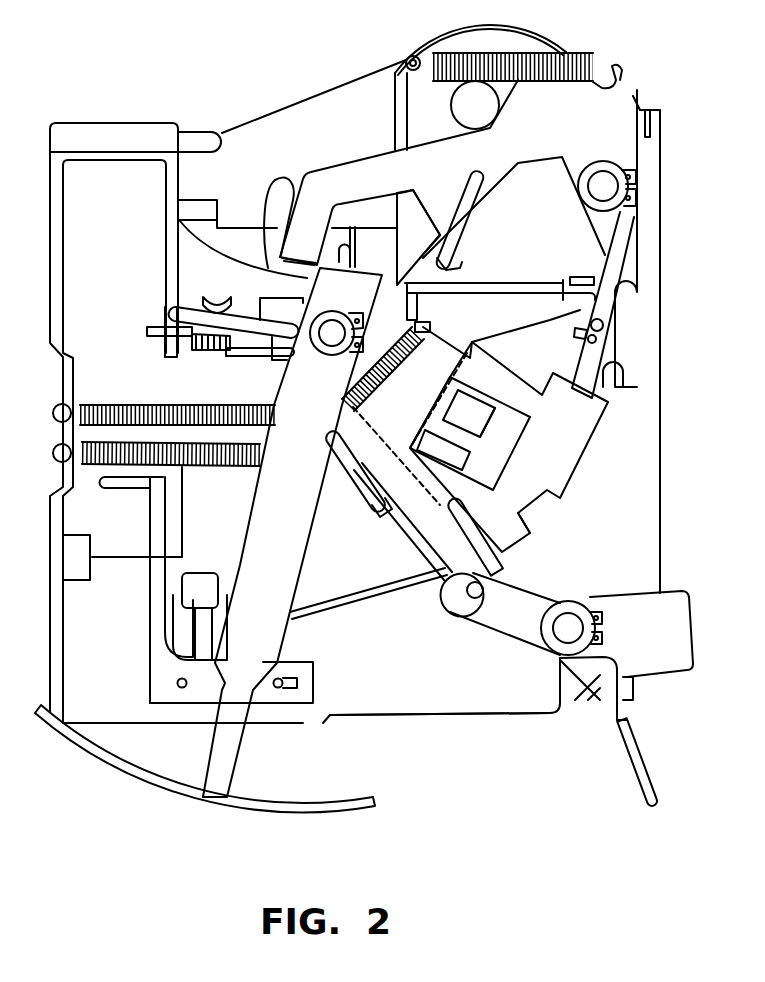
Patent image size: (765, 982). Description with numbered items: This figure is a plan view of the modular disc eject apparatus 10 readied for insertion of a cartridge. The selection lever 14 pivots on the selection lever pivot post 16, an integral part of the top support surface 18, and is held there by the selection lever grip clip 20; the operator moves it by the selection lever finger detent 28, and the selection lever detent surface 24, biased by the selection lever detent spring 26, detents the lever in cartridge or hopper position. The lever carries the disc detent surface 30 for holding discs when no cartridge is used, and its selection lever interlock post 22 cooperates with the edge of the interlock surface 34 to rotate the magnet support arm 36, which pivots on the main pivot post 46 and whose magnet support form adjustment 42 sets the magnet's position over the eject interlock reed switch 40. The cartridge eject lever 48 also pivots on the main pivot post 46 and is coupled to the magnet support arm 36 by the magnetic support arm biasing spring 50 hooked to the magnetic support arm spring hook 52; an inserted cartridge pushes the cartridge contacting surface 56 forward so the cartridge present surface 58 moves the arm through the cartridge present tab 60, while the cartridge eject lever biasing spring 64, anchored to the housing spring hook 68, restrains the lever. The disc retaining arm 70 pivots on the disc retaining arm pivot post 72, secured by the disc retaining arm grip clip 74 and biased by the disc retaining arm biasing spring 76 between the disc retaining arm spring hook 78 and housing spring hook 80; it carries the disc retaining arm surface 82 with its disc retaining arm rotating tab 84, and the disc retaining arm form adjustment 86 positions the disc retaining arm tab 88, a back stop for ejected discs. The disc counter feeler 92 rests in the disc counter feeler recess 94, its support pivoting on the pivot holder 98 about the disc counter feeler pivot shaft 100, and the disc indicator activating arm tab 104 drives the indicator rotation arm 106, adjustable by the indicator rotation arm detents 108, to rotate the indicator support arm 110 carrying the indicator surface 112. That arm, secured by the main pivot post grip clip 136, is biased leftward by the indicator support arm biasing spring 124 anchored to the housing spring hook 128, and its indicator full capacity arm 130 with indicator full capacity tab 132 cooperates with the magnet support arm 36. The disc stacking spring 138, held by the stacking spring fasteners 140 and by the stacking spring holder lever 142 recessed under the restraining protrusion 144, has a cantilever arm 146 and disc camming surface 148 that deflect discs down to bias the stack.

The modular disc eject apparatus 10 is at (679, 519).
The selection lever 14 is at (663, 642).
The selection lever pivot post 16 is at (560, 637).
The top support surface 18 is at (429, 682).
The selection lever grip clip 20 is at (588, 607).
The selection lever interlock post 22 is at (470, 598).
The selection lever detent surface 24 is at (442, 584).
The selection lever detent spring 26 is at (377, 607).
The selection lever finger detent 28 is at (645, 766).
The disc detent surface 30 is at (619, 723).
The interlock surface 34 is at (444, 545).
The magnet support arm 36 is at (555, 460).
The eject interlock reed switch 40 is at (596, 346).
The magnet support form adjustment 42 is at (522, 539).
The main pivot post 46 is at (331, 346).
The cartridge eject lever 48 is at (474, 318).
The magnetic support arm biasing spring 50 is at (404, 363).
The magnetic support arm spring hook 52 is at (421, 334).
The cartridge contacting surface 56 is at (578, 276).
The cartridge present surface 58 is at (352, 503).
The cartridge present tab 60 is at (383, 511).
The cartridge eject lever biasing spring 64 is at (248, 467).
The housing spring hook 68 is at (52, 453).
The disc retaining arm 70 is at (358, 193).
The disc retaining arm pivot post 72 is at (617, 188).
The disc retaining arm grip clip 74 is at (622, 165).
The disc retaining arm biasing spring 76 is at (553, 52).
The disc retaining arm spring hook 78 is at (620, 70).
The housing spring hook 80 is at (408, 57).
The disc retaining arm surface 82 is at (472, 231).
The disc retaining arm rotating tab 84 is at (462, 266).
The disc retaining arm form adjustment 86 is at (428, 240).
The disc retaining arm tab 88 is at (266, 260).
The disc counter feeler 92 is at (351, 248).
The disc counter feeler recess 94 is at (350, 227).
The pivot holder 98 is at (210, 350).
The disc counter feeler pivot shaft 100 is at (148, 334).
The disc indicator activating arm tab 104 is at (220, 297).
The indicator rotation arm 106 is at (182, 311).
The indicator rotation arm detents 108 is at (288, 353).
The indicator support arm 110 is at (284, 571).
The indicator surface 112 is at (352, 807).
The indicator support arm biasing spring 124 is at (122, 404).
The housing spring hook 128 is at (52, 406).
The indicator full capacity arm 130 is at (488, 398).
The indicator full capacity tab 132 is at (505, 431).
The main pivot post grip clip 136 is at (358, 310).
The disc stacking spring 138 is at (139, 630).
The stacking spring fasteners 140 is at (177, 683).
The stacking spring holder lever 142 is at (205, 636).
The restraining protrusion 144 is at (200, 575).
The cantilever arm 146 is at (150, 524).
The disc camming surface 148 is at (102, 482).